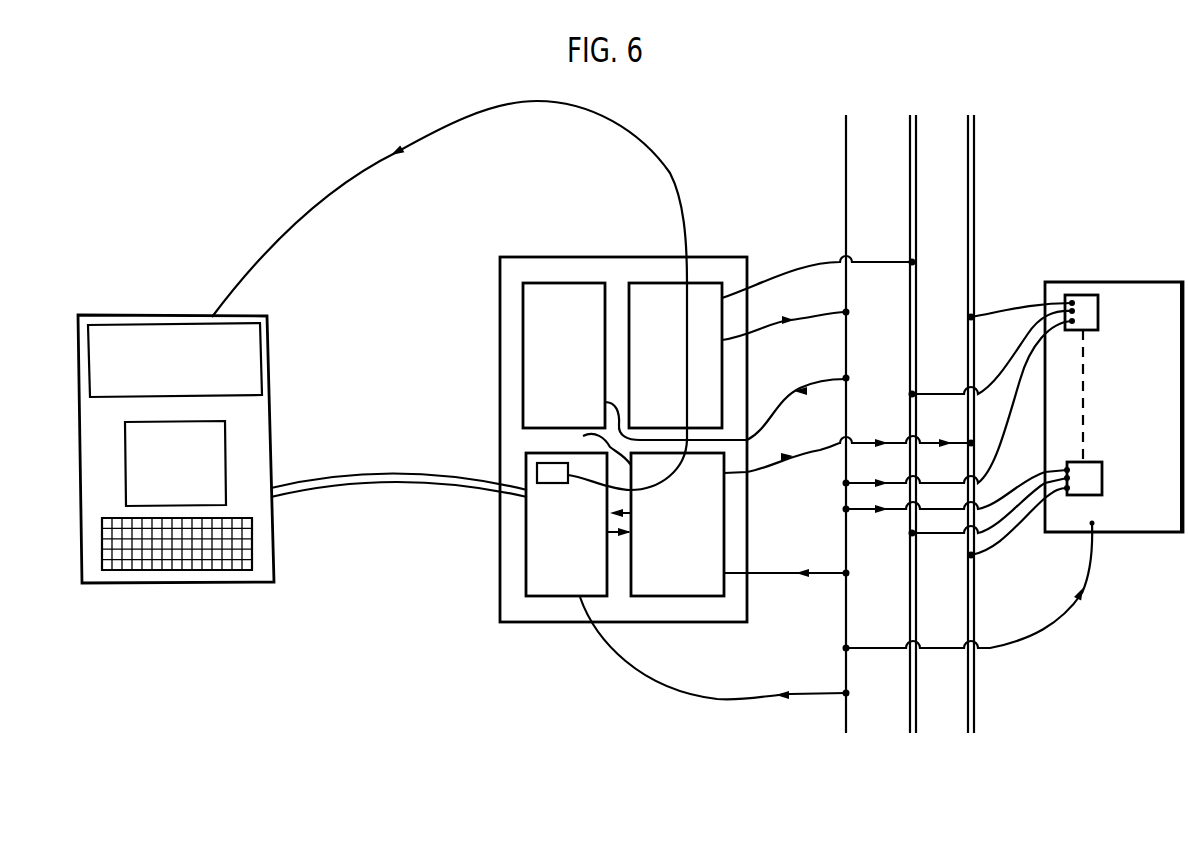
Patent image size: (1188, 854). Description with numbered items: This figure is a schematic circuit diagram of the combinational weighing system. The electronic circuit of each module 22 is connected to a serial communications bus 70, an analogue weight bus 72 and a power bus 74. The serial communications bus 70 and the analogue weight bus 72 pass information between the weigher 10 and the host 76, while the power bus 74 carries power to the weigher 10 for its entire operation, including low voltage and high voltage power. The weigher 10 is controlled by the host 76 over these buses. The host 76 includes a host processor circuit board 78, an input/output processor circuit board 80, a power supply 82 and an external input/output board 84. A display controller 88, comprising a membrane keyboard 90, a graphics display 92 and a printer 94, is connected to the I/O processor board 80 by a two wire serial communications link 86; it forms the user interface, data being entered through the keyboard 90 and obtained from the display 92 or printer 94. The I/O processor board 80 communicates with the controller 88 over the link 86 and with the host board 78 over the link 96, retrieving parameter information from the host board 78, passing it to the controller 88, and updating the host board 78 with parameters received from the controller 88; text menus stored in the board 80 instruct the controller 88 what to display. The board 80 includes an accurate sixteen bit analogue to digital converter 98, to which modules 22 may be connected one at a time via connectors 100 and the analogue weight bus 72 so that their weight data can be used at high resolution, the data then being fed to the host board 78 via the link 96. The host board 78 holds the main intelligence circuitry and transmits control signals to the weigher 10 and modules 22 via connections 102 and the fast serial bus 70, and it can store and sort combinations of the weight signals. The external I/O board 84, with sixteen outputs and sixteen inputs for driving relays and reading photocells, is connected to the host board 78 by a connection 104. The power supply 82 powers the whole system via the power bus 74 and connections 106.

The weigher 10 is at (1128, 527).
The module 22 is at (1100, 482).
The serial communications bus 70 is at (974, 122).
The analogue weight bus 72 is at (913, 122).
The power bus 74 is at (846, 143).
The host 76 is at (522, 620).
The host processor circuit board 78 is at (695, 587).
The input/output processor circuit board 80 is at (537, 575).
The power supply 82 is at (704, 293).
The external input/output board 84 is at (590, 295).
The two wire serial communications link 86 is at (438, 485).
The display controller 88 is at (120, 576).
The membrane keyboard 90 is at (247, 527).
The graphics display 92 is at (213, 465).
The printer 94 is at (243, 347).
The link 96 is at (620, 535).
The analogue to digital converter 98 is at (540, 462).
The connector 100 is at (783, 270).
The connection 102 is at (810, 452).
The connection 104 is at (592, 436).
The connection 106 is at (630, 118).